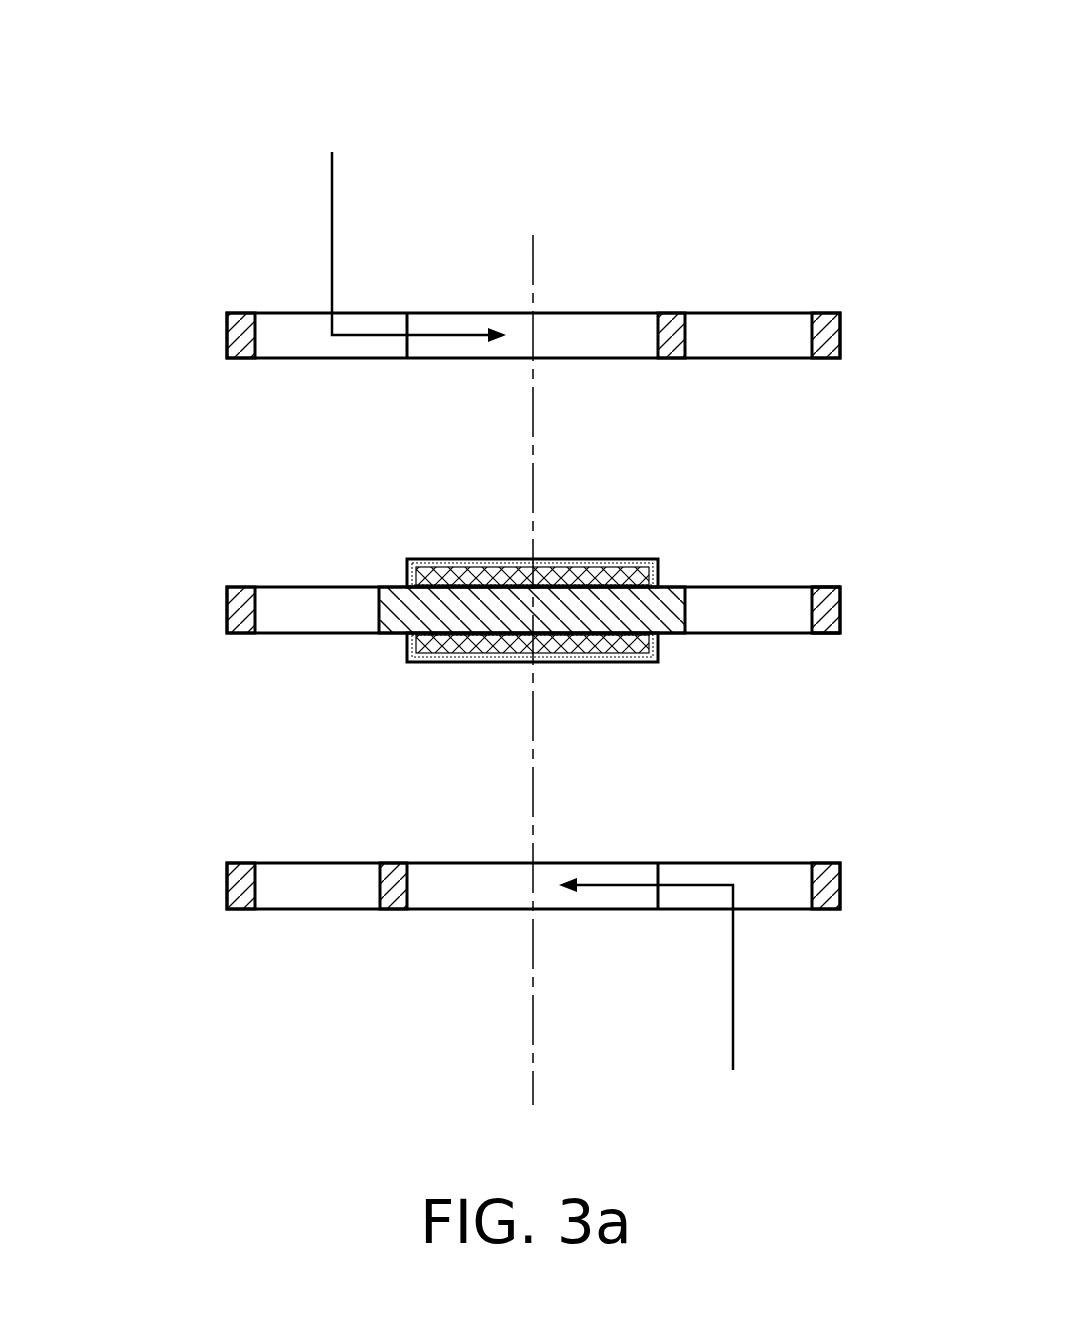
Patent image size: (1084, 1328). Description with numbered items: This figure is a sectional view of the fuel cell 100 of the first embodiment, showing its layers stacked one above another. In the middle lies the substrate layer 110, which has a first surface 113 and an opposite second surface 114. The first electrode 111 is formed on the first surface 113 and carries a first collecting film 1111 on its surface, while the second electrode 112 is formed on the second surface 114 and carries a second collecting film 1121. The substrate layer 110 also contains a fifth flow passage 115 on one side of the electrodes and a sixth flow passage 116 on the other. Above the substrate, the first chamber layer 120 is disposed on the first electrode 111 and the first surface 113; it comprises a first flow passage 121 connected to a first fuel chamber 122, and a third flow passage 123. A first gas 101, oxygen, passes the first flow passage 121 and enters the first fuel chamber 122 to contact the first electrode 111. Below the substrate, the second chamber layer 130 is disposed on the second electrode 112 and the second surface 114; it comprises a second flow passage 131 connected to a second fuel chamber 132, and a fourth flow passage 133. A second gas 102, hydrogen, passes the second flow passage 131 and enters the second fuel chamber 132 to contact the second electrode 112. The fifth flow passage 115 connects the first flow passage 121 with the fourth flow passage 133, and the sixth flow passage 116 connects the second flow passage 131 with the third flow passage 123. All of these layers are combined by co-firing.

The fuel cell 100 is at (137, 46).
The first gas 101 is at (332, 184).
The second gas 102 is at (733, 1037).
The substrate layer 110 is at (227, 610).
The first electrode 111 is at (660, 572).
The first collecting film 1111 is at (585, 560).
The second electrode 112 is at (588, 613).
The second collecting film 1121 is at (573, 662).
The first surface 113 is at (838, 590).
The second surface 114 is at (828, 636).
The fifth flow passage 115 is at (298, 636).
The sixth flow passage 116 is at (782, 598).
The first chamber layer 120 is at (227, 338).
The first flow passage 121 is at (296, 320).
The first fuel chamber 122 is at (600, 322).
The third flow passage 123 is at (745, 322).
The second chamber layer 130 is at (227, 886).
The second flow passage 131 is at (770, 898).
The second fuel chamber 132 is at (478, 906).
The fourth flow passage 133 is at (295, 906).